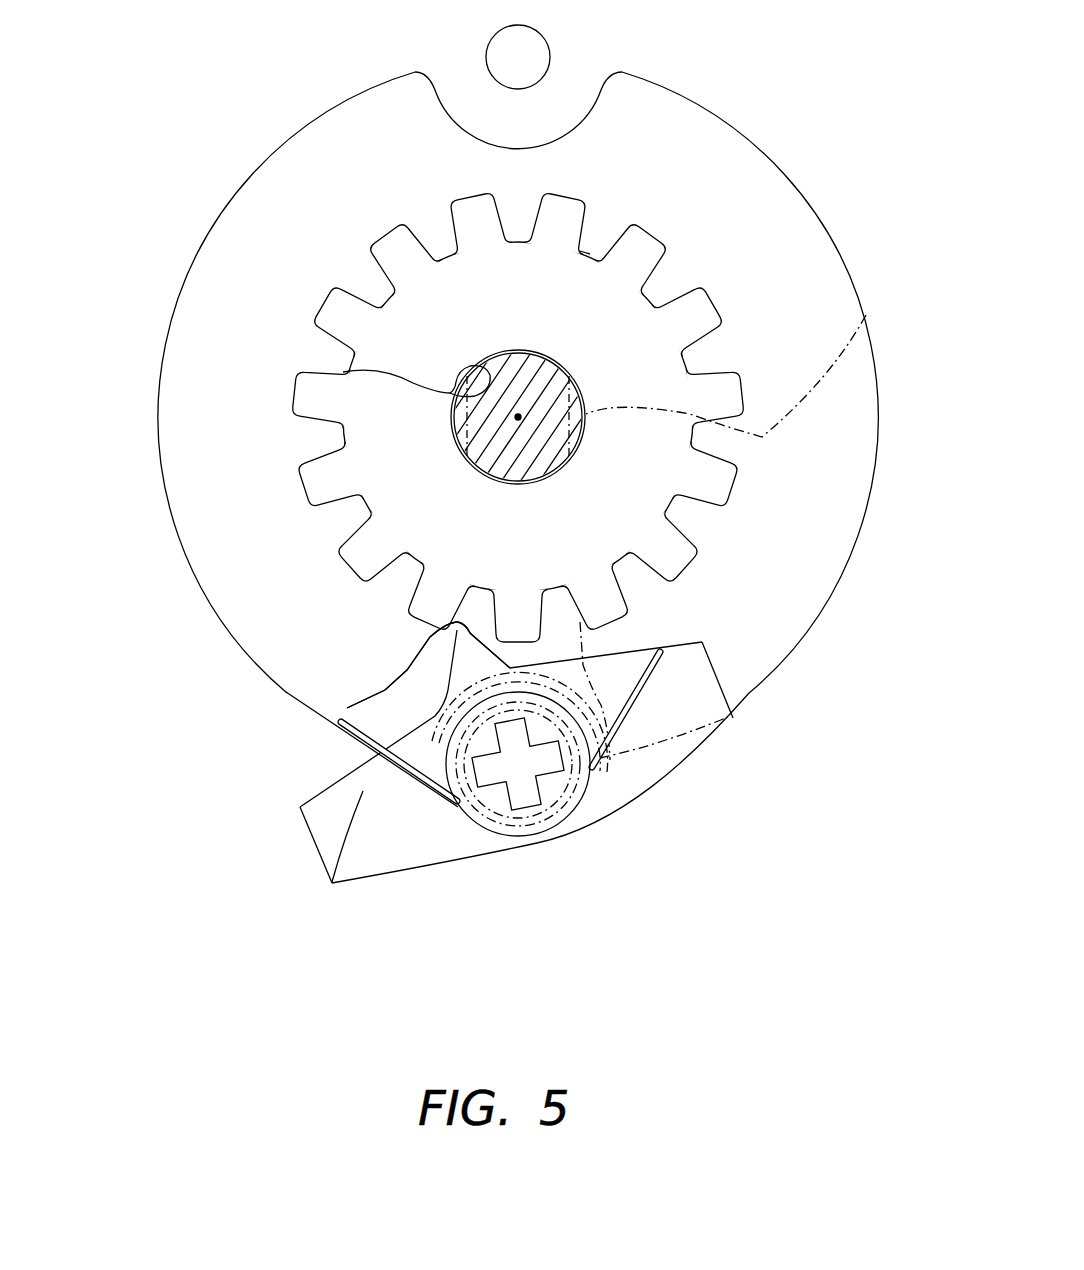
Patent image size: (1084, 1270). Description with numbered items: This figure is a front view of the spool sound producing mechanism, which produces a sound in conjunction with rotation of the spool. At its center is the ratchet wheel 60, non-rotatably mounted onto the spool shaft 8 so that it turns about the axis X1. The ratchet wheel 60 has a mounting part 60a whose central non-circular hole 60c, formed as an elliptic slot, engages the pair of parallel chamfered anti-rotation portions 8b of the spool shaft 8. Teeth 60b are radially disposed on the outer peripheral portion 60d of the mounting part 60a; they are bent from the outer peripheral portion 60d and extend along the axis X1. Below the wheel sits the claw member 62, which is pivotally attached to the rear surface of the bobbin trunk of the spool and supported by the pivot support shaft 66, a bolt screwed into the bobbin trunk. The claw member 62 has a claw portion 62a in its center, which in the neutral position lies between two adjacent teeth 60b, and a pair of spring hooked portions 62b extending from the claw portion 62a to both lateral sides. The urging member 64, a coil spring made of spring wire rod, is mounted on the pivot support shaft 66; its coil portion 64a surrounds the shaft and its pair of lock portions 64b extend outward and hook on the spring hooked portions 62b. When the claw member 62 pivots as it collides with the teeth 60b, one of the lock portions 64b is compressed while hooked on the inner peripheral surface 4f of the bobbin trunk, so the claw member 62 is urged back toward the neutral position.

The inner peripheral surface 4f is at (193, 562).
The spool shaft 8 is at (591, 380).
The anti-rotation portions 8b is at (742, 360).
The axis X1 is at (519, 412).
The ratchet wheel 60 is at (424, 210).
The mounting part 60a is at (338, 357).
The teeth 60b is at (373, 237).
The non-circular hole 60c is at (343, 372).
The outer peripheral portion 60d is at (590, 262).
The claw member 62 is at (639, 813).
The claw portion 62a is at (347, 708).
The spring hooked portions 62b is at (377, 827).
The urging member 64 is at (439, 816).
The coil portion 64a is at (553, 810).
The lock portions 64b is at (332, 883).
The pivot support shaft 66 is at (542, 837).